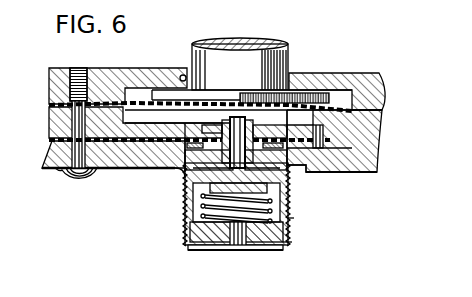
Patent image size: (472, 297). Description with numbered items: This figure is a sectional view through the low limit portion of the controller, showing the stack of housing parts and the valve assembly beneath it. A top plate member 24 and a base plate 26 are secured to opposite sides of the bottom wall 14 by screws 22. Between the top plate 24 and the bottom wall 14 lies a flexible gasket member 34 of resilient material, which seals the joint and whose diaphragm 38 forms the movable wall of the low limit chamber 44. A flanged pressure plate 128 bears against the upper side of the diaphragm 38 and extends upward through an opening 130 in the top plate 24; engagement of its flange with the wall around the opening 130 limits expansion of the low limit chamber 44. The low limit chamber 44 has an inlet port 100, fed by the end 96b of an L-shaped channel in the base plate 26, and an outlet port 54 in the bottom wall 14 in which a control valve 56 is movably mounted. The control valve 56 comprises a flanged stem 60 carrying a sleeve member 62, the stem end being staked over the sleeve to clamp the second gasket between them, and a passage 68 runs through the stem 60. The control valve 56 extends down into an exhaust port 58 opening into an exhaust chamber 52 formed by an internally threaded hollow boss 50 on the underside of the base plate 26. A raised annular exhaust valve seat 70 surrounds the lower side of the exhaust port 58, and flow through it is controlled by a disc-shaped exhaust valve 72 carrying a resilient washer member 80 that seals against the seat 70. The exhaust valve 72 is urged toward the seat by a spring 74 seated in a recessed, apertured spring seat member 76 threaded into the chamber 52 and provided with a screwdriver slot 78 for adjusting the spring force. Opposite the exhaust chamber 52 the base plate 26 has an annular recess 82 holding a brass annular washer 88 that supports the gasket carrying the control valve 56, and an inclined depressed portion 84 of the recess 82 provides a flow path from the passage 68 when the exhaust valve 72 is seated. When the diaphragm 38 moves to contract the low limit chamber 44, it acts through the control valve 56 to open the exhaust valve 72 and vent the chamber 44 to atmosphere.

The bottom wall 14 is at (376, 118).
The screws 22 is at (72, 176).
The top plate member 24 is at (361, 77).
The base plate 26 is at (379, 172).
The flexible gasket member 34 is at (372, 112).
The diaphragm 38 is at (140, 85).
The low limit chamber 44 is at (323, 125).
The internally threaded hollow boss 50 is at (291, 240).
The exhaust chamber 52 is at (294, 220).
The outlet port 54 is at (200, 126).
The control valve 56 is at (224, 125).
The exhaust port 58 is at (187, 215).
The flanged stem 60 is at (323, 172).
The sleeve member 62 is at (188, 195).
The passage 68 is at (250, 127).
The exhaust valve seat 70 is at (292, 176).
The exhaust valve 72 is at (272, 201).
The spring 74 is at (203, 252).
The spring seat member 76 is at (263, 251).
The screwdriver slot 78 is at (221, 248).
The washer member 80 is at (193, 238).
The annular recess 82 is at (353, 175).
The inclined depressed portion 84 is at (180, 169).
The annular washer 88 is at (182, 148).
The end of channel 96b is at (376, 153).
The inlet port 100 is at (337, 134).
The pressure plate 128 is at (269, 70).
The opening 130 is at (181, 74).